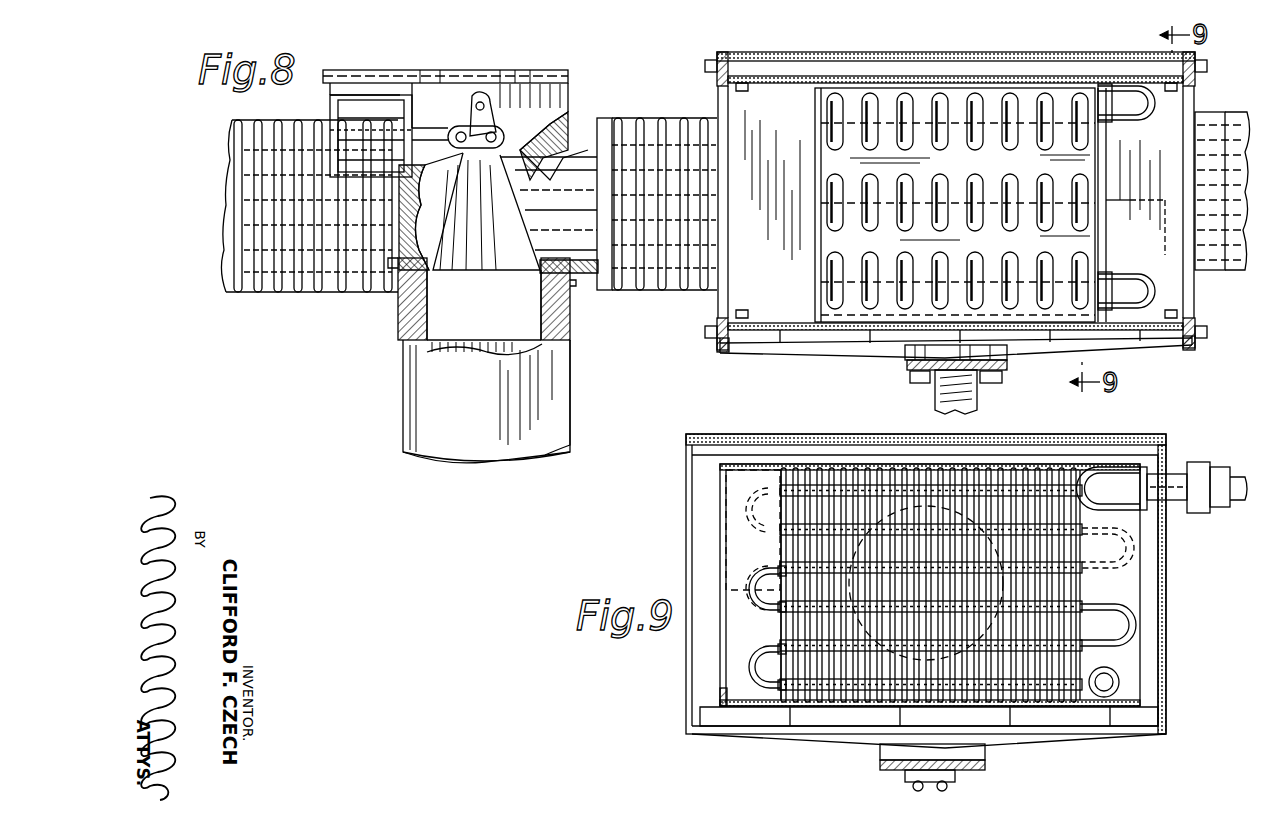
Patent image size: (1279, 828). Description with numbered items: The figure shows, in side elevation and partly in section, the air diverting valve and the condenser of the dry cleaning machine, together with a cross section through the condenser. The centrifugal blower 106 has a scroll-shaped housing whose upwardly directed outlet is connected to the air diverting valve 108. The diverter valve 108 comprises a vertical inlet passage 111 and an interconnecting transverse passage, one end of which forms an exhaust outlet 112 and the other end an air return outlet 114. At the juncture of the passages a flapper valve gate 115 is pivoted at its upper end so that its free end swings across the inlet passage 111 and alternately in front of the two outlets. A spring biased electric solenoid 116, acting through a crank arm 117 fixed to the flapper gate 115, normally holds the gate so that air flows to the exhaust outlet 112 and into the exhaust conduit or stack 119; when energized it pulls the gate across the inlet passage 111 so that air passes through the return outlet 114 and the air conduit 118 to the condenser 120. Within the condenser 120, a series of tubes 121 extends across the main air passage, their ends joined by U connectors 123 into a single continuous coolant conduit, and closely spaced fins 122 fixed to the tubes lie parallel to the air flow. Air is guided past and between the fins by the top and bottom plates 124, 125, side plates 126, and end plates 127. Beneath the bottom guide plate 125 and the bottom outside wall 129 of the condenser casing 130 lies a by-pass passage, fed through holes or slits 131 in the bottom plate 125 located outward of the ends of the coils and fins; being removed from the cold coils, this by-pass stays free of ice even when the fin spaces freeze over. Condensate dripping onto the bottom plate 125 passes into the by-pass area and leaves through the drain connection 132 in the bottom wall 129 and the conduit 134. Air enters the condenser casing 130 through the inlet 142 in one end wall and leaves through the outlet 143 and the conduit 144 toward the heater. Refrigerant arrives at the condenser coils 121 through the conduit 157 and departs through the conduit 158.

In FIG. 8, the centrifugal fan or blower 106 is at (403, 440).
In FIG. 8, the air diverting valve 108 is at (566, 91).
In FIG. 8, the vertical inlet passage 111 is at (482, 320).
In FIG. 8, the exhaust outlet 112 is at (423, 250).
In FIG. 8, the air return outlet 114 is at (568, 260).
In FIG. 8, the flapper valve gate 115 is at (518, 196).
In FIG. 8, the spring biased electric solenoid 116 is at (376, 100).
In FIG. 8, the crank arm 117 is at (496, 112).
In FIG. 8, the air conduit 118 is at (600, 294).
In FIG. 8, the exhaust conduit or stack 119 is at (269, 291).
In FIG. 8, the condenser 120 is at (912, 58).
In FIG. 9, the tubes or conduits 121 is at (798, 524).
In FIG. 9, the fins 122 is at (1026, 470).
In FIG. 8, the U connectors 123 is at (830, 262).
In FIG. 9, the U connectors 123 is at (724, 532).
In FIG. 8, the top plate 124 is at (760, 84).
In FIG. 8, the bottom plate 125 is at (734, 348).
In FIG. 9, the side plates 126 is at (718, 658).
In FIG. 9, the end plates 127 is at (1140, 666).
In FIG. 8, the bottom outside wall 129 is at (862, 356).
In FIG. 9, the bottom outside wall 129 is at (804, 734).
In FIG. 9, the condenser casing 130 is at (1170, 614).
In FIG. 8, the holes or slits 131 is at (788, 352).
In FIG. 8, the drain connection 132 is at (1006, 366).
In FIG. 9, the drain connection 132 is at (986, 754).
In FIG. 8, the conduit 134 is at (969, 402).
In FIG. 9, the conduit 134 is at (957, 782).
In FIG. 8, the inlet 142 is at (722, 272).
In FIG. 9, the inlet 142 is at (917, 470).
In FIG. 8, the outlet 143 is at (1194, 270).
In FIG. 8, the conduit 144 is at (1230, 124).
In FIG. 8, the conduit 157 is at (1170, 105).
In FIG. 9, the conduit 157 is at (1196, 526).
In FIG. 8, the conduit 158 is at (1171, 300).